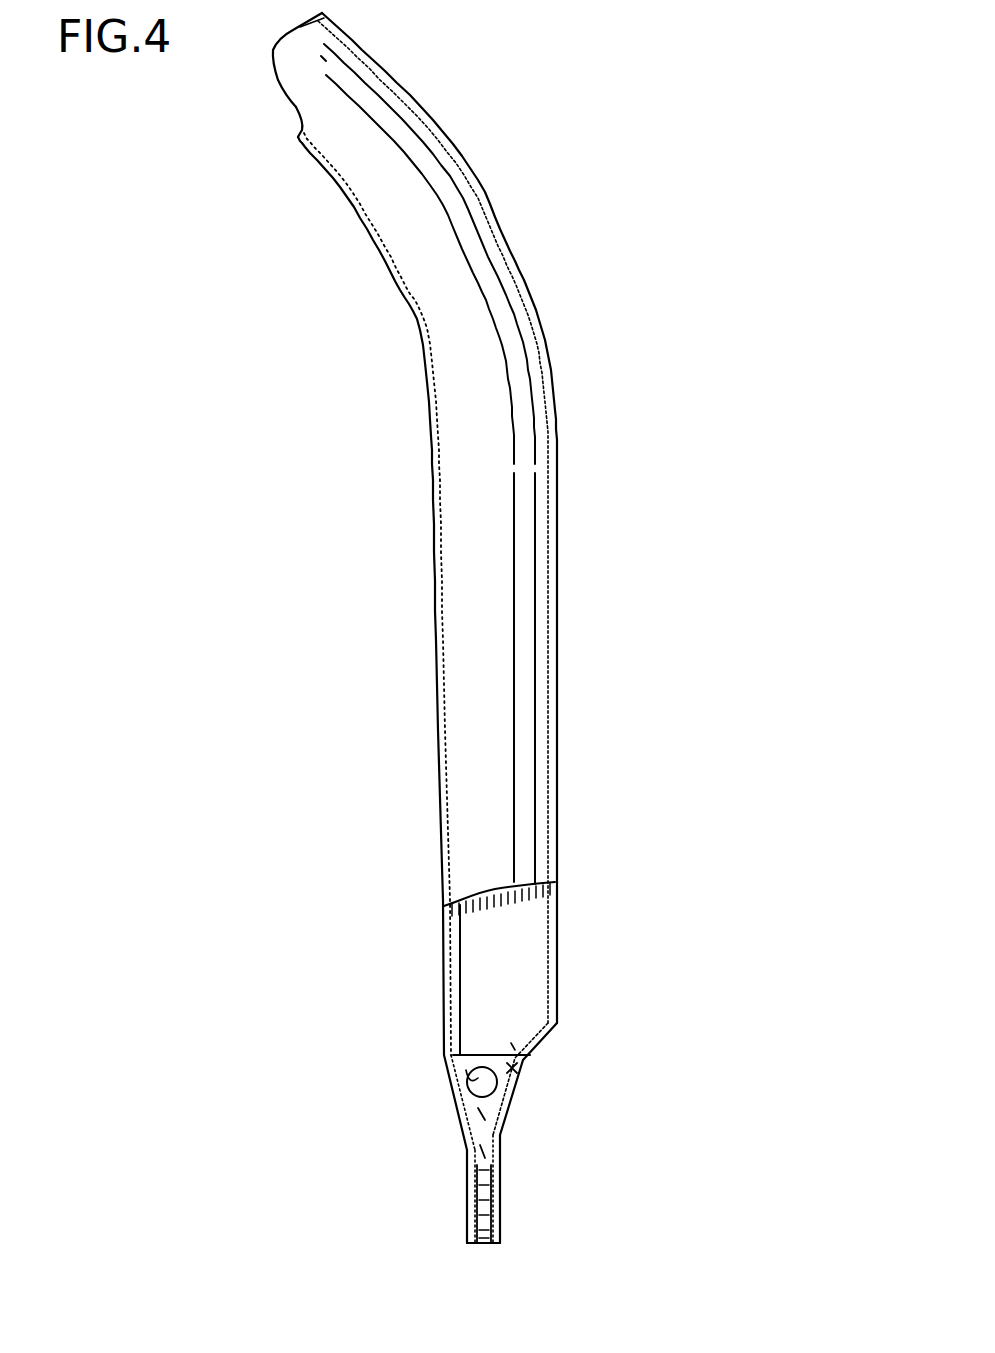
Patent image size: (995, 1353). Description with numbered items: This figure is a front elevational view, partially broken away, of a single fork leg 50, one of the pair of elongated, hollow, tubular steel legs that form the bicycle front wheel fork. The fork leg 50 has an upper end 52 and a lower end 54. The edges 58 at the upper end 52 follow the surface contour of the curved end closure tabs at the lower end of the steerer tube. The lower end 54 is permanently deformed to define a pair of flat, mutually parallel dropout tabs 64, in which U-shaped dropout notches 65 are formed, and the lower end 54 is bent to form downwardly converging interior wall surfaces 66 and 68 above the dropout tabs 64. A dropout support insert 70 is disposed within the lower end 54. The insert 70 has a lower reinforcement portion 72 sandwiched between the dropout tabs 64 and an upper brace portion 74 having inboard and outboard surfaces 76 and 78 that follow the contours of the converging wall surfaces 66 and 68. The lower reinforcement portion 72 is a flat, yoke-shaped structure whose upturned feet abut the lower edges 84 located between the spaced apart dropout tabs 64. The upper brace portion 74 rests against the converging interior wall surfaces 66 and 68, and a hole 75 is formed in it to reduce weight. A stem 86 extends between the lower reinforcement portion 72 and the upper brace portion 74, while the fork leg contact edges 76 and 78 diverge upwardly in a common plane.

The fork leg 50 is at (562, 367).
The upper end 52 is at (326, 136).
The edges 58 is at (279, 85).
The lower end 54 is at (450, 1053).
The hole 75 is at (457, 1040).
The dropout support insert 70 is at (487, 1048).
The interior wall surface 66 is at (455, 1100).
The inboard surface 76 is at (463, 1123).
The interior wall surface 68 is at (510, 1103).
The upper brace portion 74 is at (517, 1068).
The outboard surface 78 is at (513, 1088).
The stem 86 is at (500, 1132).
The dropout tabs 64 is at (468, 1152).
The edges 84 is at (467, 1200).
The dropout notches 65 is at (467, 1210).
The lower reinforcement portion 72 is at (484, 1247).